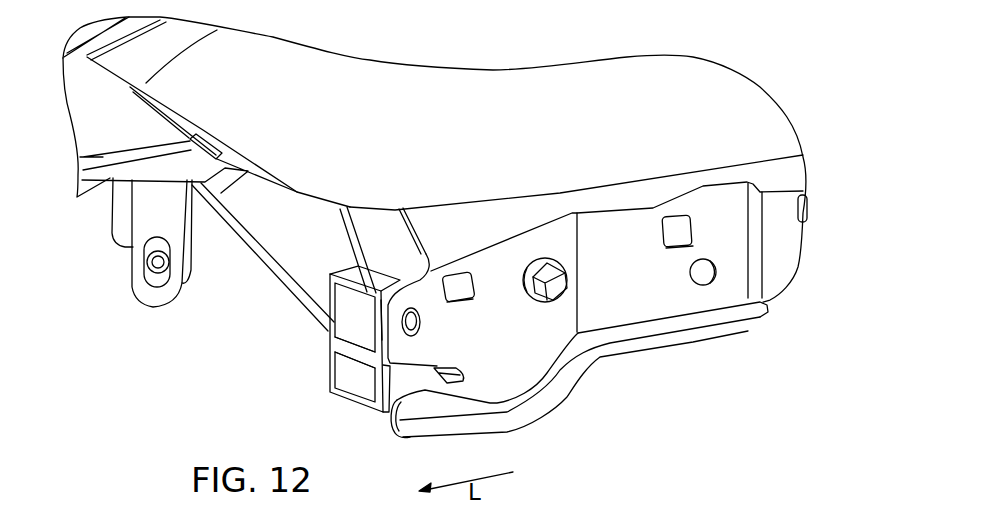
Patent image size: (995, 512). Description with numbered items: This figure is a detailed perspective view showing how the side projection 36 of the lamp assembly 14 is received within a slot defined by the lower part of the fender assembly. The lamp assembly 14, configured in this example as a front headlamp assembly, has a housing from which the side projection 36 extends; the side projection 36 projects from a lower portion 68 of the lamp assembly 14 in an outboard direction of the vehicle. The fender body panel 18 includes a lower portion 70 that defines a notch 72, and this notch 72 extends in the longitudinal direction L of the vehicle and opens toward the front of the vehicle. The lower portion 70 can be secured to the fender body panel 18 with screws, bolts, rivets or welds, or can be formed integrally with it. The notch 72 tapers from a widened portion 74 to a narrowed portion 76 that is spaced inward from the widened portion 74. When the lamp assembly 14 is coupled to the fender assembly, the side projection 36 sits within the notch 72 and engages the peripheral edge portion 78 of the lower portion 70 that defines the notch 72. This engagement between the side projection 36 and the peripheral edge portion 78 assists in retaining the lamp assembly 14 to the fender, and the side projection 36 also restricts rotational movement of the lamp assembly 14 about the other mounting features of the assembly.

The lamp assembly 14 is at (63, 131).
The fender body panel 18 is at (742, 117).
The side projection 36 is at (483, 393).
The lower portion 68 is at (307, 272).
The lower portion 70 is at (513, 353).
The notch 72 is at (405, 384).
The widened portion 74 is at (388, 413).
The narrowed portion 76 is at (438, 366).
The peripheral edge portion 78 is at (426, 388).